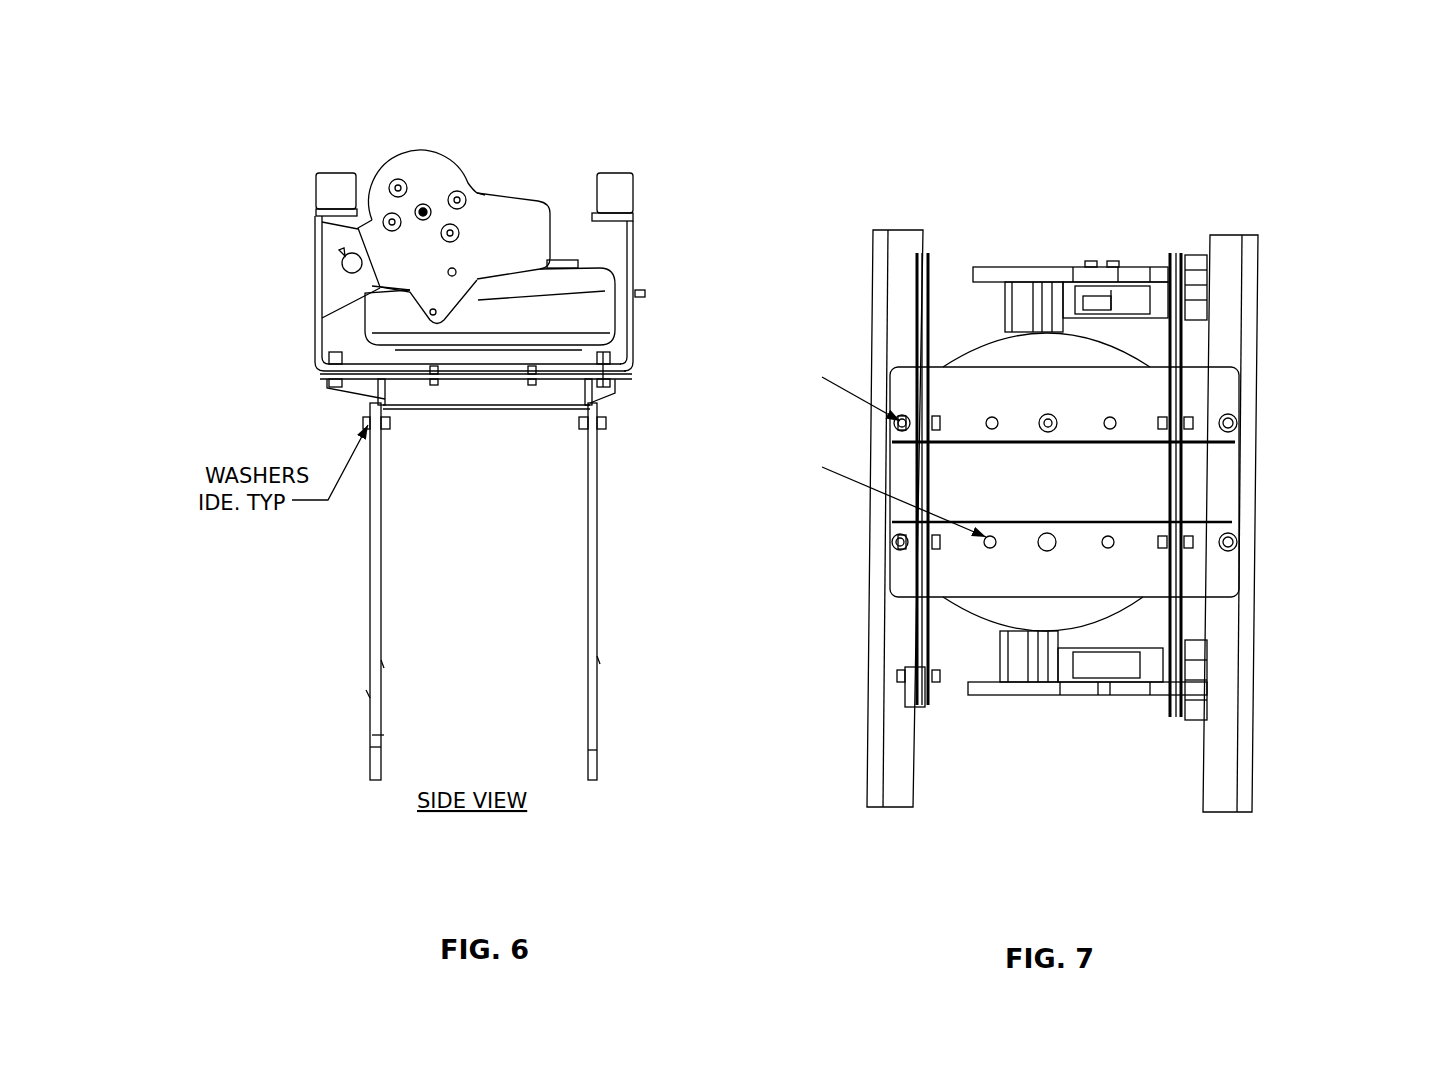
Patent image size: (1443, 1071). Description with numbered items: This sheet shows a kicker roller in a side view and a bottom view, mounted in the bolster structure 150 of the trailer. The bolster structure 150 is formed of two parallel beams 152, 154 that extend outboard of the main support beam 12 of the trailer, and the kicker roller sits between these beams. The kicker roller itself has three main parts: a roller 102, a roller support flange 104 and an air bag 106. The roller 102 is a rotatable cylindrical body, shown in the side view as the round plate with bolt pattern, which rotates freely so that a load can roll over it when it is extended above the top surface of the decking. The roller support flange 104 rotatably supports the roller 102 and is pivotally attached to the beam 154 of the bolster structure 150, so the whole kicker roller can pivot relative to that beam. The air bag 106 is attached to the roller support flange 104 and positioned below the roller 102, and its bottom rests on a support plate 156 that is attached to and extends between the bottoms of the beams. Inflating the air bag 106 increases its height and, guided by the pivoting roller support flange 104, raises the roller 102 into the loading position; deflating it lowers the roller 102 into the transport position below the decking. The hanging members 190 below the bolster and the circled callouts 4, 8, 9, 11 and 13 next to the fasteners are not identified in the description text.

In FIG. 6, the roller 102 is at (457, 170).
In FIG. 6, the roller support flange 104 is at (520, 220).
In FIG. 7, the roller support flange 104 is at (1055, 267).
In FIG. 6, the air bag 106 is at (588, 307).
In FIG. 7, the air bag 106 is at (1068, 610).
In FIG. 6, the bolster structure 150 is at (275, 312).
In FIG. 7, the bolster structure 150 is at (1270, 330).
In FIG. 6, the beam 152 is at (633, 335).
In FIG. 7, the beam 152 is at (873, 748).
In FIG. 6, the beam 154 is at (313, 338).
In FIG. 7, the beam 154 is at (1243, 714).
In FIG. 6, the support plate 156 is at (419, 385).
In FIG. 7, the support plate 156 is at (1205, 488).
In FIG. 6, the support leg 190 is at (368, 597).
In FIG. 7, the support leg 190 is at (913, 640).
In FIG. 6, the fastener 4 is at (383, 665).
In FIG. 6, the fastener 8 is at (533, 380).
In FIG. 6, the fastener 9 is at (573, 471).
In FIG. 6, the fastener 11 is at (622, 390).
In FIG. 6, the main support beam 12 is at (696, 411).
In FIG. 6, the fastener 13 is at (367, 693).